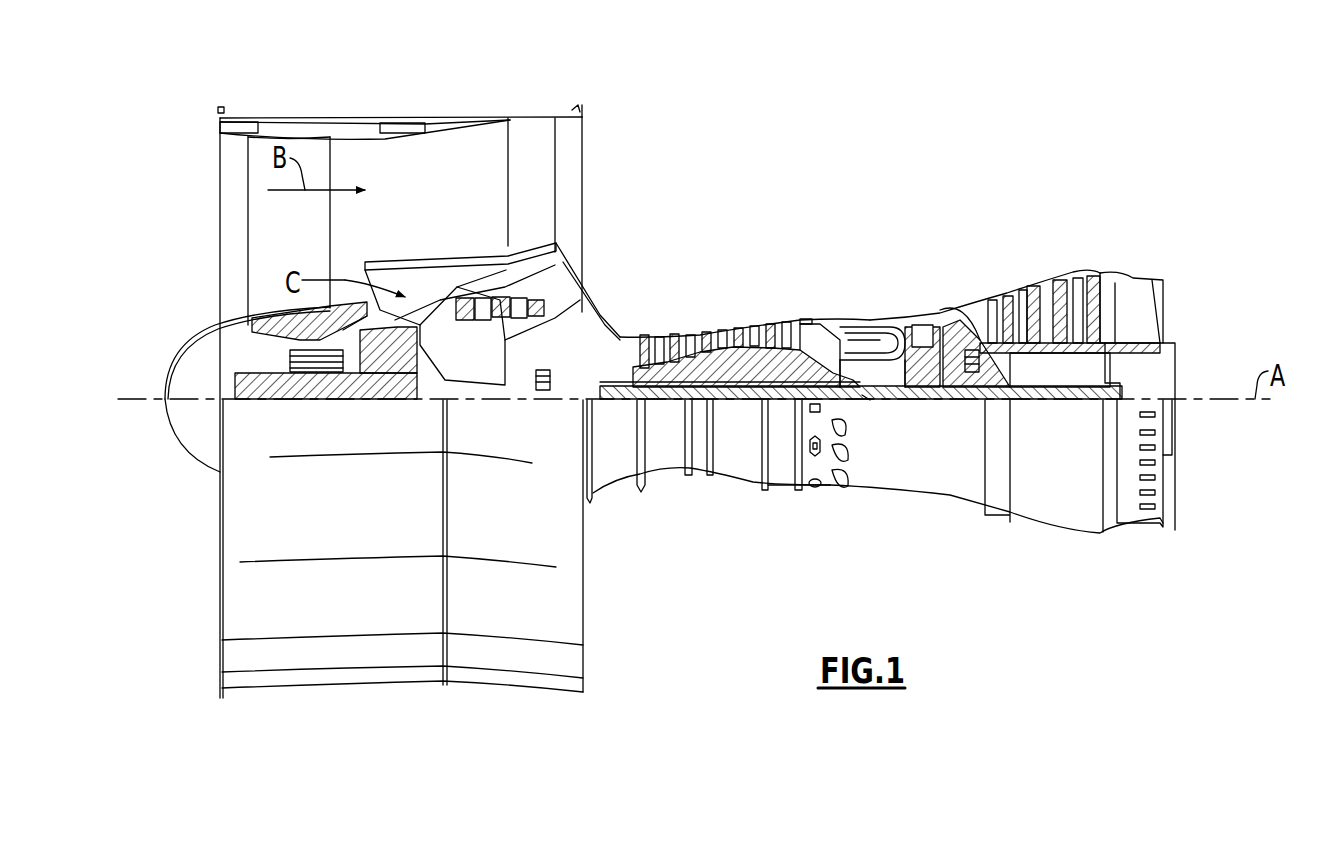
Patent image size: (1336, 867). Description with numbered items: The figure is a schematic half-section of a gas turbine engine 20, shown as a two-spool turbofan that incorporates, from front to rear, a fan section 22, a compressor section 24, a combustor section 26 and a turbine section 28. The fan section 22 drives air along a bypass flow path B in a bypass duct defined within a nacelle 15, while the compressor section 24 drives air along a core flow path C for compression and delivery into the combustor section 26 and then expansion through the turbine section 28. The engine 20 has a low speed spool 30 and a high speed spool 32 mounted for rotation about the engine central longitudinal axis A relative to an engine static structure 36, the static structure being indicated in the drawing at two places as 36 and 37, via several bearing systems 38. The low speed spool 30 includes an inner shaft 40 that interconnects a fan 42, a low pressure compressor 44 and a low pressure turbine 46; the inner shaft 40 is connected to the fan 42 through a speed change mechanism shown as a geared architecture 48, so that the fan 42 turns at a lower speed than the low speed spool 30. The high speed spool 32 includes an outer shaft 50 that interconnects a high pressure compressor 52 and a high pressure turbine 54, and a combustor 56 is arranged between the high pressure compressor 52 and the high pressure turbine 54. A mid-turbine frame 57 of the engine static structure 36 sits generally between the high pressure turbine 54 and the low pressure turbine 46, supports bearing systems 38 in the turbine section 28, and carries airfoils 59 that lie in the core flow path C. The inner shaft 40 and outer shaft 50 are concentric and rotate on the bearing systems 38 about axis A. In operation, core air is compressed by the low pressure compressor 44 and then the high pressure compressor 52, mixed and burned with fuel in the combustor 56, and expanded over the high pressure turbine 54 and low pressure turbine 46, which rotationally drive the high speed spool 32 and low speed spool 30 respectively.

The nacelle 15 is at (402, 121).
The gas turbine engine 20 is at (863, 163).
The fan section 22 is at (330, 108).
The compressor section 24 is at (632, 307).
The combustor section 26 is at (853, 295).
The turbine section 28 is at (1000, 262).
The low speed spool 30 is at (740, 405).
The high speed spool 32 is at (777, 368).
The engine static structure 36 is at (780, 492).
The engine static structure 37 is at (946, 498).
The bearing systems 38 is at (541, 382).
The inner shaft 40 is at (607, 400).
The fan 42 is at (306, 234).
The low pressure compressor 44 is at (505, 308).
The low pressure turbine 46 is at (1047, 282).
The geared architecture 48 is at (408, 382).
The outer shaft 50 is at (862, 396).
The high pressure compressor 52 is at (700, 336).
The high pressure turbine 54 is at (922, 322).
The combustor 56 is at (857, 340).
The mid-turbine frame 57 is at (963, 305).
The airfoils 59 is at (985, 357).